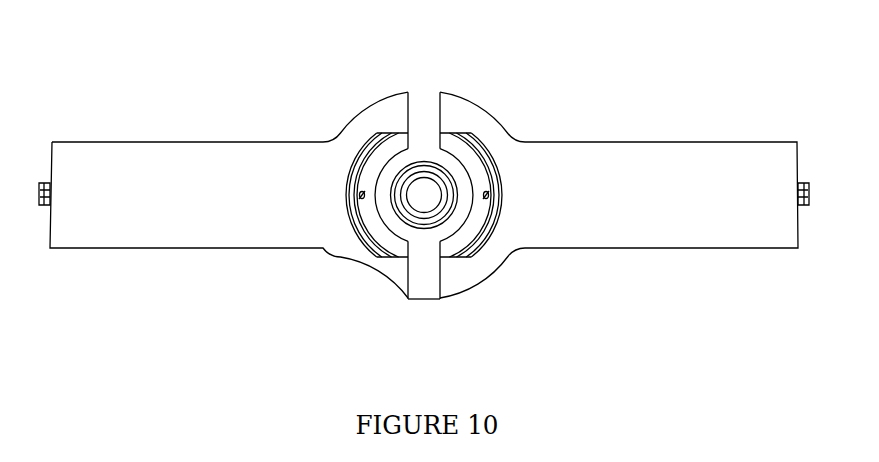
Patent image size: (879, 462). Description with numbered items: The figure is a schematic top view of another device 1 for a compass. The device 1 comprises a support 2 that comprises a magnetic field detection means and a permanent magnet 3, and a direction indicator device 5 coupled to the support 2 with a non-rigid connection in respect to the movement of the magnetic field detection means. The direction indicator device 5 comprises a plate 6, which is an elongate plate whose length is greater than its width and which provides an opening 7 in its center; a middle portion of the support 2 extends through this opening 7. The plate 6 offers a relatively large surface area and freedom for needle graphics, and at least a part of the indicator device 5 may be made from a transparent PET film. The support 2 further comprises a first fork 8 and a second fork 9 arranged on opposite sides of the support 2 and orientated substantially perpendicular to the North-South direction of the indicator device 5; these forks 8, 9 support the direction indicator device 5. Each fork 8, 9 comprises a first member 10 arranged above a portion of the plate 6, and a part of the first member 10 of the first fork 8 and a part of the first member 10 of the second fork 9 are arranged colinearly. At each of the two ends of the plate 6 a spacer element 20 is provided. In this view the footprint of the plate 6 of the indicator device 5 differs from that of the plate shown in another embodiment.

The device 1 is at (573, 120).
The support 2 is at (405, 177).
The permanent magnet 3 is at (475, 167).
The direction indicator device 5 is at (173, 176).
The plate 6 is at (133, 142).
The opening 7 is at (363, 152).
The first fork 8 is at (417, 302).
The second fork 9 is at (422, 90).
The first member 10 is at (427, 107).
The spacer element 20 is at (49, 188).